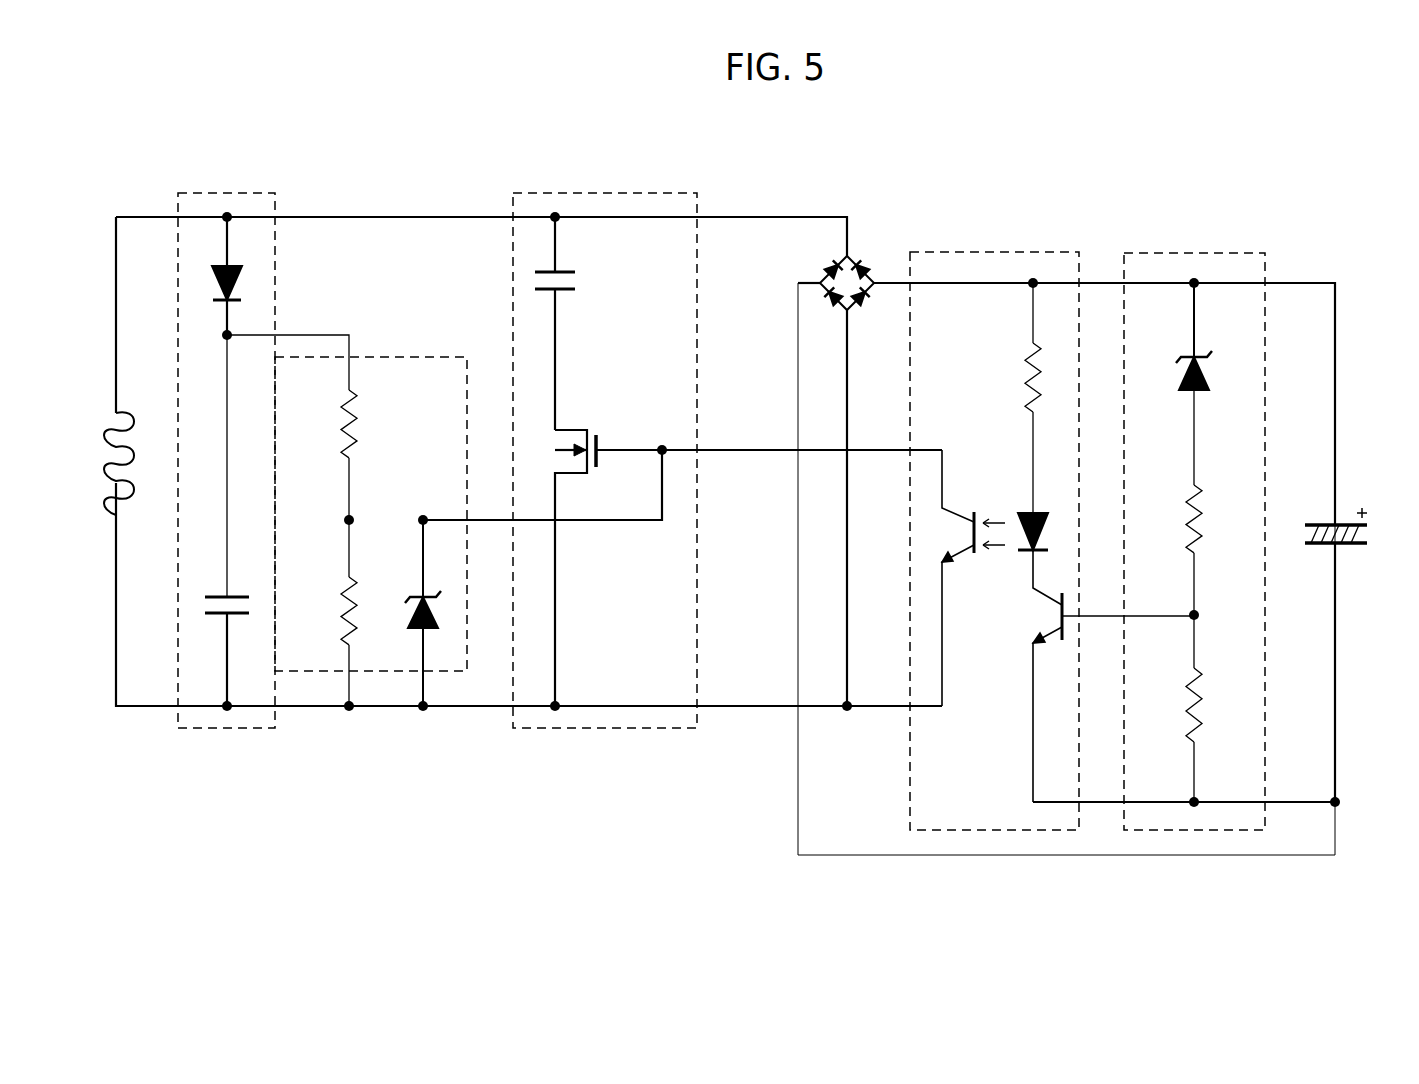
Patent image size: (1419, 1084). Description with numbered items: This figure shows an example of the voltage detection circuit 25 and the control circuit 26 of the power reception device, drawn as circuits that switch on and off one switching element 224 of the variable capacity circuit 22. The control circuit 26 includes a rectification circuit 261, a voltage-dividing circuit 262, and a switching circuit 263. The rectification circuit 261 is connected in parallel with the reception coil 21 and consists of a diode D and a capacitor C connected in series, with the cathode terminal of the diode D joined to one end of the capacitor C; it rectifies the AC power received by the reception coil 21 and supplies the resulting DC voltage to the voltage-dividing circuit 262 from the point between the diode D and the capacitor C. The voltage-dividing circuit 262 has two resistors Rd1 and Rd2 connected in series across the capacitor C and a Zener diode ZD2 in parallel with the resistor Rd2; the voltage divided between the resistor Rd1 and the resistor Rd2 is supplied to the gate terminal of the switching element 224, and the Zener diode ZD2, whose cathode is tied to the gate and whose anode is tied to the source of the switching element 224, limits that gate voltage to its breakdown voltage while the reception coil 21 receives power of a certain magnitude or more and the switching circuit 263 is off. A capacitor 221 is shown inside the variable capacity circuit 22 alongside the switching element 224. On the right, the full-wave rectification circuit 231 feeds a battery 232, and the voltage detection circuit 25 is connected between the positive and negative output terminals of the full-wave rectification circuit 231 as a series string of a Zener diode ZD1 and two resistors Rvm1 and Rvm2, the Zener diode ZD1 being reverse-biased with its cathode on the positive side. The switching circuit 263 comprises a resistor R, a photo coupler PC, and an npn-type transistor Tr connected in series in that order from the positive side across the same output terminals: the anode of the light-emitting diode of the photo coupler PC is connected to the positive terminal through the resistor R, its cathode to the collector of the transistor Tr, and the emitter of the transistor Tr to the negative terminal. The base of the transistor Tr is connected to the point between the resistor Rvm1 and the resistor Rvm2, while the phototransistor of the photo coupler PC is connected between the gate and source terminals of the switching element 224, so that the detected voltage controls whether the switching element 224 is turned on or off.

The reception coil 21 is at (132, 490).
The variable capacity circuit 22 is at (607, 420).
The capacitor 221 is at (585, 278).
The switching element 224 is at (578, 420).
The full-wave rectification circuit 231 is at (855, 258).
The battery 232 is at (1348, 553).
The voltage detection circuit 25 is at (1198, 490).
The control circuit 26 is at (697, 898).
The rectification circuit 261 is at (226, 460).
The voltage-dividing circuit 262 is at (428, 618).
The switching circuit 263 is at (923, 576).
The diode D is at (206, 288).
The capacitor C is at (212, 590).
The resistor Rd1 is at (358, 420).
The resistor Rd2 is at (332, 598).
The Zener diode ZD2 is at (402, 600).
The resistor R is at (1020, 363).
The photo coupler PC is at (990, 508).
The npn-type transistor Tr is at (1030, 622).
The Zener diode ZD1 is at (1213, 372).
The resistor Rvm1 is at (1215, 510).
The resistor Rvm2 is at (1213, 698).